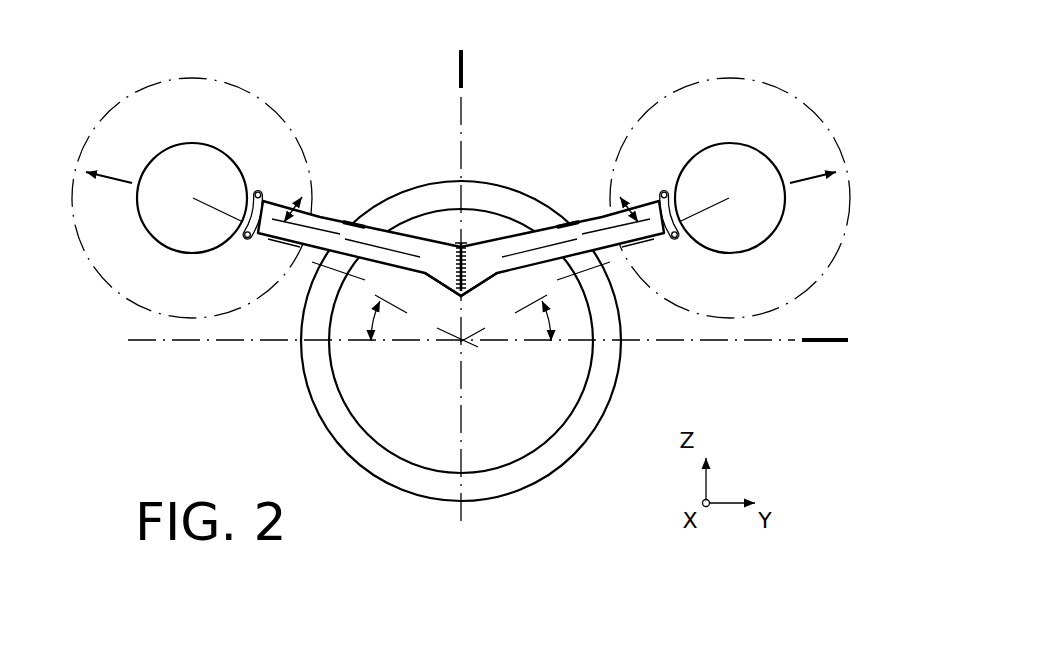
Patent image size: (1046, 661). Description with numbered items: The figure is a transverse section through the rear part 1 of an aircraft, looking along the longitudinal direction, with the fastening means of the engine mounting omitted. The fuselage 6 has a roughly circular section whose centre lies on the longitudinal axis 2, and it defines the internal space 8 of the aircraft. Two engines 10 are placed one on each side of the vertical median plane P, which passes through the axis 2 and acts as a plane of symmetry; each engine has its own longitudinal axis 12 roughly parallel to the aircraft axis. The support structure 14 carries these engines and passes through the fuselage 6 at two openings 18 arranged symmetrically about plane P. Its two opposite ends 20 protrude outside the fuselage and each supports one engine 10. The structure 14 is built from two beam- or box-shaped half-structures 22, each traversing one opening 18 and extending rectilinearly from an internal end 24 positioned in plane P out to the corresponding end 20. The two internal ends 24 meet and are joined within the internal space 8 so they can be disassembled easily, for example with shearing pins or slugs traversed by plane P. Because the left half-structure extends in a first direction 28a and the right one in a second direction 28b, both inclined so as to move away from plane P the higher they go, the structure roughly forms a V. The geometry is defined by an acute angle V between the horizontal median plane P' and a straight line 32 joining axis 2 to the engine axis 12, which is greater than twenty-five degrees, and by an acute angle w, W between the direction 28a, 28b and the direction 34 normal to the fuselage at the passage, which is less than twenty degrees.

The rear part 1 is at (503, 104).
The longitudinal axis 2 is at (465, 344).
The fuselage 6 is at (463, 178).
The internal space 8 is at (496, 431).
The engine 10 is at (241, 71).
The longitudinal axis 12 is at (193, 197).
The support structure 14 is at (420, 240).
The opening 18 is at (354, 221).
The end 20 is at (258, 191).
The half-structure 22 is at (412, 272).
The internal end 24 is at (449, 256).
The first direction 28a is at (108, 172).
The second direction 28b is at (815, 172).
The straight line 32 is at (312, 263).
The direction normal to the fuselage 34 is at (266, 157).
The vertical median plane P is at (485, 60).
The horizontal median plane P' is at (825, 369).
The acute angle V is at (455, 318).
The acute angle w is at (301, 196).
The acute angle W is at (620, 196).